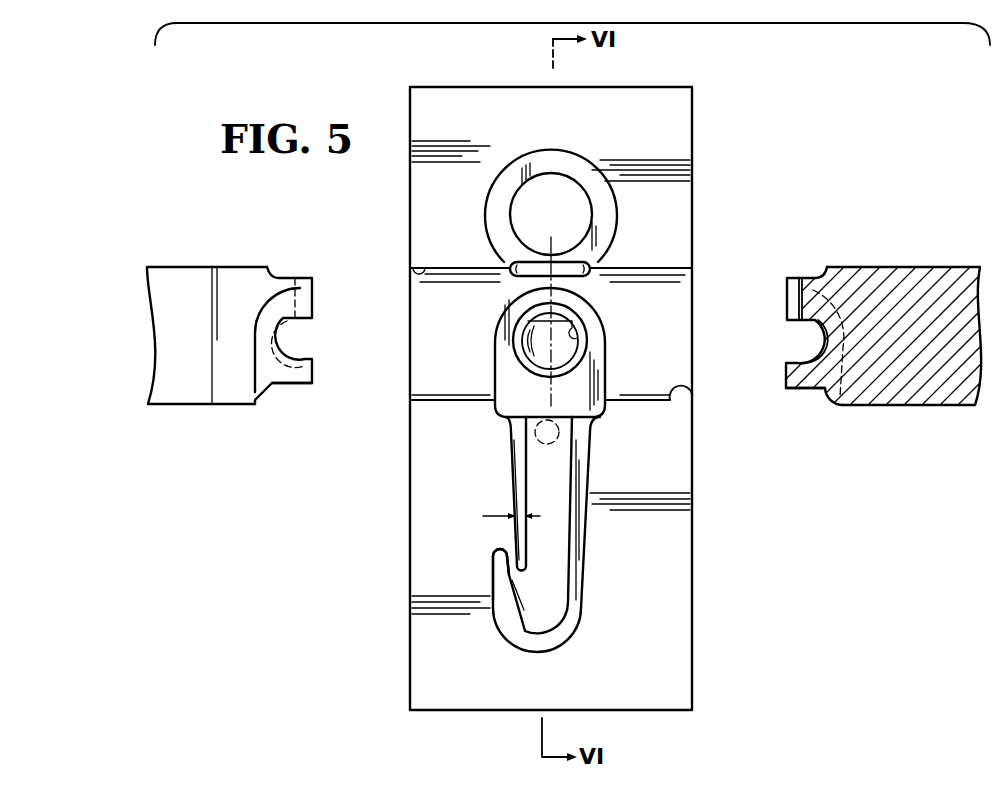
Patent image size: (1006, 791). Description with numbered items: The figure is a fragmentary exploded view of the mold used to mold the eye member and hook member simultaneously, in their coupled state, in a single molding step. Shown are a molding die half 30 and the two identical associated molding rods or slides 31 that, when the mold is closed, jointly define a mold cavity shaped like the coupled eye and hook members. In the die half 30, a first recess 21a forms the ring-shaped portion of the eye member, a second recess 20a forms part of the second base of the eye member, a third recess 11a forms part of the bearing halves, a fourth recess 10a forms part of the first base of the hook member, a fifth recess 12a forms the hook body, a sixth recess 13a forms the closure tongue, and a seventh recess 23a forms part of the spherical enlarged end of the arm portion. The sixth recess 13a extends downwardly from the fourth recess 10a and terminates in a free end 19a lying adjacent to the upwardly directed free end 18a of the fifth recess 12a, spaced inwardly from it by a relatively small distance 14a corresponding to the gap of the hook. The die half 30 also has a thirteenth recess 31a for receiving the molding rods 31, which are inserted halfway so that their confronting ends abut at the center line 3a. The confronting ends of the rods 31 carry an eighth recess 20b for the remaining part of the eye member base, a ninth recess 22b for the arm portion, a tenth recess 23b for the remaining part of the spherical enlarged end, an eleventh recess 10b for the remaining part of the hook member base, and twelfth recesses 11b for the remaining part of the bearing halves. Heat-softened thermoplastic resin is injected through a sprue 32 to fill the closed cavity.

The molding die half 30 is at (663, 87).
The associated molding rod 31 is at (192, 265).
The thirteenth recess 31a is at (417, 266).
The first recess 21a is at (557, 162).
The second recess 20a is at (572, 265).
The center line 3a is at (513, 292).
The fourth recess 10a is at (547, 470).
The third recess 11a is at (507, 373).
The seventh recess 23a is at (573, 342).
The sprue 32 is at (556, 441).
The fifth recess 12a is at (537, 534).
The sixth recess 13a is at (517, 450).
The distance 14a is at (511, 514).
The free end of fifth recess 18a is at (498, 558).
The free end of sixth recess 19a is at (523, 558).
The eighth recess 20b is at (292, 275).
The ninth recess 22b is at (297, 307).
The tenth recess 23b is at (302, 360).
The twelfth recess 11b is at (262, 405).
The eleventh recess 10b is at (292, 385).